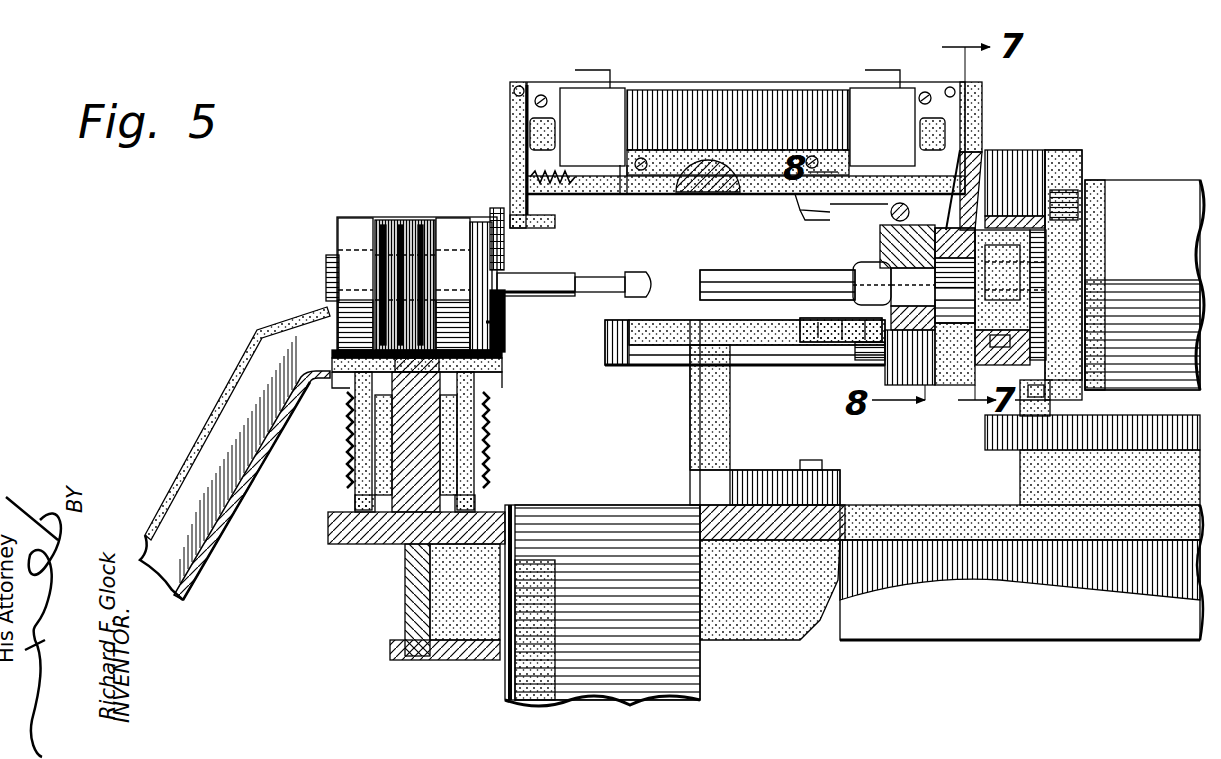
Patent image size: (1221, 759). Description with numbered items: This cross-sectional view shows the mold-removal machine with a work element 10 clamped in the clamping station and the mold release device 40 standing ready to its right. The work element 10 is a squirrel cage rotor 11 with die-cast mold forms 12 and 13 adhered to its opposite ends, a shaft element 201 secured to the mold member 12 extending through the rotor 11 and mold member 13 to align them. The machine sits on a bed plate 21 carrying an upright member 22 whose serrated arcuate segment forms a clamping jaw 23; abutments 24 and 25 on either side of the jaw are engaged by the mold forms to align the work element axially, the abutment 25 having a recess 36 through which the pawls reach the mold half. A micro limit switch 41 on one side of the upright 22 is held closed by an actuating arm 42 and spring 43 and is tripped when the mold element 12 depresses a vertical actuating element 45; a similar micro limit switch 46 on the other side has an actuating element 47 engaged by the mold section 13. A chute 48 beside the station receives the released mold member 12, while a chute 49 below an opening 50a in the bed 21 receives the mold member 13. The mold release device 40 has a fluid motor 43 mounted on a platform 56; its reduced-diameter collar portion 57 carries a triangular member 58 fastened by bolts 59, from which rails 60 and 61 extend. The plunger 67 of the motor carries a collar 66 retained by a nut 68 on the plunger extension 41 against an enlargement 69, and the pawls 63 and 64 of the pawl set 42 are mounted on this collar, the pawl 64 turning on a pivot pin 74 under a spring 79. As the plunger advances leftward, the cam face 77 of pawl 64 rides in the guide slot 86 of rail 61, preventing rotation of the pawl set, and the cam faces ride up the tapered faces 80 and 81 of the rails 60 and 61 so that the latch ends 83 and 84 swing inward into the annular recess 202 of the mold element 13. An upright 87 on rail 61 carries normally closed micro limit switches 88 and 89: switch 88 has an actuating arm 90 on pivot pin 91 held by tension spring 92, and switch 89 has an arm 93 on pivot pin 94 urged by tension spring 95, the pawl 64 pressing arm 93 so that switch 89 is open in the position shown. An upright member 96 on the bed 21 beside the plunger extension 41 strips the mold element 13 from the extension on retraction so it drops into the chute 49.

The work element 10 is at (430, 220).
The rotor assembly 11 is at (408, 235).
The mold form 12 is at (355, 228).
The mold form 13 is at (458, 226).
The bed plate 21 is at (345, 535).
The upright member 22 is at (415, 510).
The clamping jaw 23 is at (465, 364).
The abutment 24 is at (328, 272).
The abutment 25 is at (480, 365).
The recess 36 is at (488, 328).
The mold release device 40 is at (796, 257).
The plunger extension 41 is at (370, 455).
The pawl set 42 is at (358, 505).
The fluid motor 43 is at (347, 440).
The vertical actuating element 45 is at (355, 380).
The micro limit switch 46 is at (487, 440).
The actuating element 47 is at (470, 383).
The chute 48 is at (215, 545).
The chute 49 is at (612, 545).
The opening 50a is at (545, 505).
The platform 56 is at (1000, 435).
The collar portion 57 is at (1012, 240).
The triangular shaped member 58 is at (1015, 170).
The fastening bolts 59 is at (1005, 355).
The rail 60 is at (676, 345).
The rail 61 is at (690, 195).
The pawl 63 is at (810, 322).
The pawl 64 is at (800, 204).
The collar 66 is at (940, 266).
The plunger 67 is at (890, 300).
The nut 68 is at (862, 270).
The enlargement 69 is at (952, 340).
The pivot pin 74 is at (892, 214).
The cam face 77 is at (965, 152).
The spring 79 is at (904, 277).
The tapered face 80 is at (618, 335).
The tapered face 81 is at (630, 194).
The latch end 83 is at (825, 330).
The latch end 84 is at (802, 215).
The guide slot 86 is at (738, 190).
The upright member 87 is at (748, 100).
The micro limit switch 88 is at (620, 105).
The micro limit switch 89 is at (895, 105).
The actuating arm 90 is at (515, 110).
The pivot pin 91 is at (522, 88).
The tension spring 92 is at (548, 188).
The actuating arm 93 is at (968, 112).
The pivot pin 94 is at (952, 86).
The tension spring 95 is at (958, 150).
The upright member 96 is at (695, 450).
The shaft element 201 is at (525, 290).
The annular recess 202 is at (496, 210).